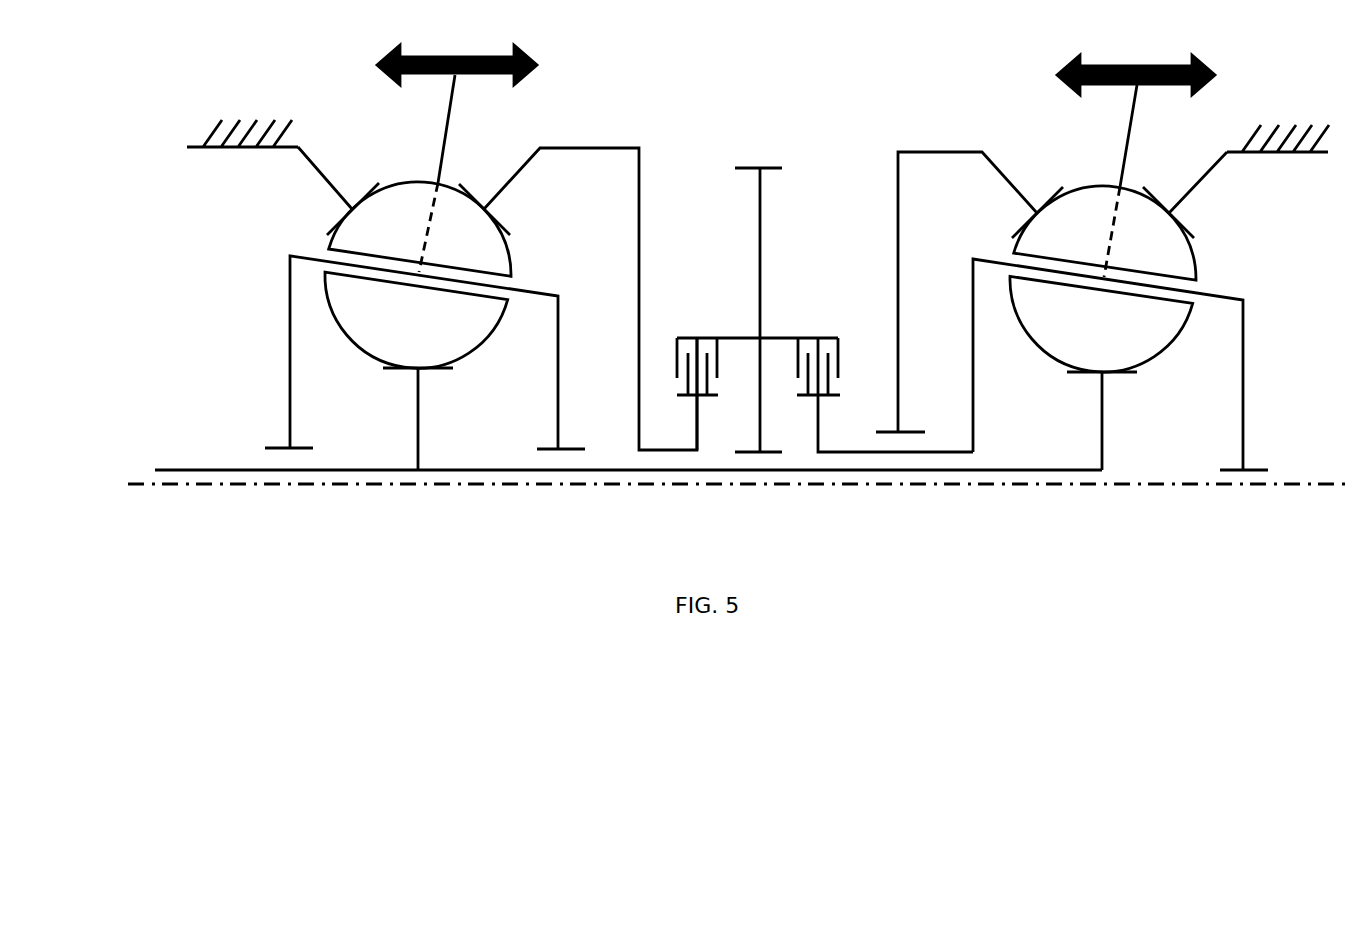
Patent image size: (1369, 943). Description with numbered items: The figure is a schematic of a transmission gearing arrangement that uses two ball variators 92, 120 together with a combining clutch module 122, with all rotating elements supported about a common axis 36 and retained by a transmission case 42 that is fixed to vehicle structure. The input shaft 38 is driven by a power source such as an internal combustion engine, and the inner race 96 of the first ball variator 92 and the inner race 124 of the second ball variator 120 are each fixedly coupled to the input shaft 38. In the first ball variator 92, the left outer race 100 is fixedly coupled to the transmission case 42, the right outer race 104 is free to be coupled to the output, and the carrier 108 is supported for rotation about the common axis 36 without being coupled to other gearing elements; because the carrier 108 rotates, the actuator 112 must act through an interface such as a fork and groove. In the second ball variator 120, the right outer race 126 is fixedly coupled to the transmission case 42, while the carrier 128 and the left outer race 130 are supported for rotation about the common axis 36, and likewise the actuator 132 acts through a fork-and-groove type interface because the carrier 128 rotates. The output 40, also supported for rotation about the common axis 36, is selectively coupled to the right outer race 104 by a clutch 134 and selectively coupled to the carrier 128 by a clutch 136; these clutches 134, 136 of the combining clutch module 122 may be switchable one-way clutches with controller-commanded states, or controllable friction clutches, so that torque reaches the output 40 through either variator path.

The common axis 36 is at (503, 485).
The input shaft 38 is at (217, 470).
The output 40 is at (760, 190).
The transmission case 42 is at (222, 121).
The ball variator 92 is at (471, 254).
The inner race 96 is at (418, 423).
The left outer race 100 is at (317, 171).
The right outer race 104 is at (513, 185).
The carrier 108 is at (290, 367).
The actuator 112 is at (475, 80).
The ball variator 120 is at (1084, 262).
The combining clutch module 122 is at (822, 252).
The inner race 124 is at (1102, 430).
The right outer race 126 is at (1197, 185).
The carrier 128 is at (973, 372).
The left outer race 130 is at (1005, 173).
The actuator 132 is at (1148, 85).
The clutch 134 is at (705, 338).
The clutch 136 is at (828, 338).